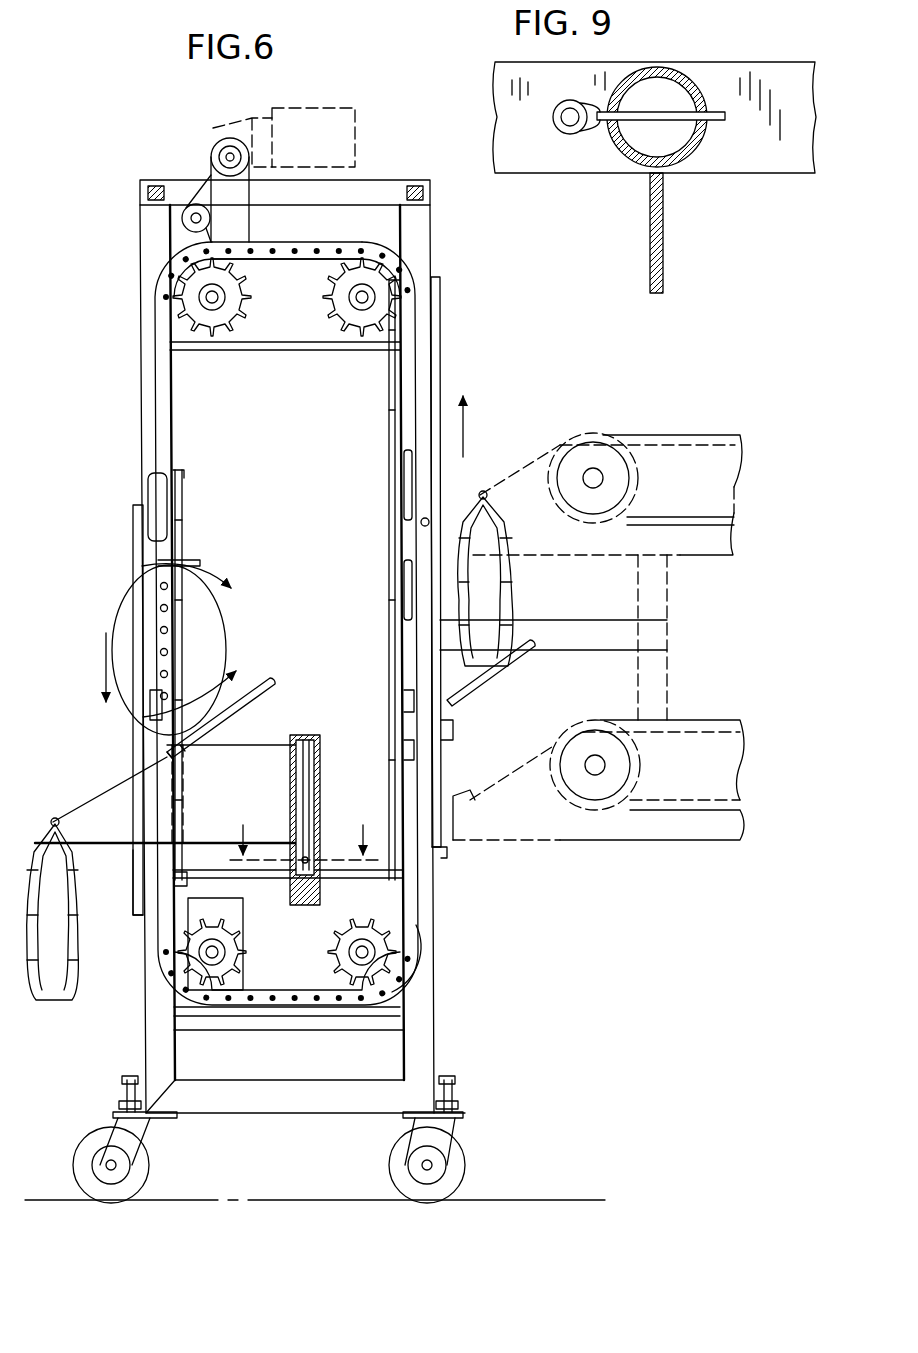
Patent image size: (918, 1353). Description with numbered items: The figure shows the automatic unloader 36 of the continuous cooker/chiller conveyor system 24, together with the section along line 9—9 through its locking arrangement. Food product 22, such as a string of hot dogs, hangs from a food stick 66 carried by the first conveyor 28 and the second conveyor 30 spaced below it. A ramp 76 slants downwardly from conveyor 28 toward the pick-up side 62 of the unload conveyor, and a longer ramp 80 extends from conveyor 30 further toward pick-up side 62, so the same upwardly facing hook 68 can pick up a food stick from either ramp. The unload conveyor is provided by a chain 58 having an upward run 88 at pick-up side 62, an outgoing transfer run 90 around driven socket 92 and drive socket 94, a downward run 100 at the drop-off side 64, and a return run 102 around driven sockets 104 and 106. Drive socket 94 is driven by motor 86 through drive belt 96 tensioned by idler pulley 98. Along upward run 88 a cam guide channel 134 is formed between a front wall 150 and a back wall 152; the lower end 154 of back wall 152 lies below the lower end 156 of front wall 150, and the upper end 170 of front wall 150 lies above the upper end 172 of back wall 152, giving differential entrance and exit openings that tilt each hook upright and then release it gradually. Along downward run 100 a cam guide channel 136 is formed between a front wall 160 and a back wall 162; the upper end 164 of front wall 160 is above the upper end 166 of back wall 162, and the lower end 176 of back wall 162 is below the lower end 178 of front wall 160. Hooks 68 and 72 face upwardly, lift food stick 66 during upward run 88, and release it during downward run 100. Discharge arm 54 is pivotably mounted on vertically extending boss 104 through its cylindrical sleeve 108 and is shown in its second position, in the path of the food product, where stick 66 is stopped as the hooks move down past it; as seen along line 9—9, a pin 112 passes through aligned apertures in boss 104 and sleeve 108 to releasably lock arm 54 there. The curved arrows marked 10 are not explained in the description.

In FIG. 6, the automatic unloader 36 is at (131, 208).
In FIG. 9, the automatic unloader 36 is at (806, 62).
In FIG. 6, the drive motor 86 is at (339, 108).
In FIG. 6, the drive belt 96 is at (216, 144).
In FIG. 6, the idler pulley 98 is at (191, 204).
In FIG. 6, the chain 58 is at (421, 274).
In FIG. 6, the outgoing transfer run 90 is at (298, 262).
In FIG. 6, the drive socket 94 is at (238, 336).
In FIG. 6, the driven socket 92 is at (328, 322).
In FIG. 6, the upper end of front wall 150 170 is at (442, 292).
In FIG. 6, the lower end of front wall 150 156 is at (447, 852).
In FIG. 6, the upper end of back wall 152 172 is at (393, 300).
In FIG. 6, the upward run 88 is at (403, 470).
In FIG. 6, the pick-up side 62 is at (430, 396).
In FIG. 6, the cam guide channel 134 is at (427, 519).
In FIG. 6, the back wall of cam guide channel 134 152 is at (399, 738).
In FIG. 6, the upper end of back wall 162 166 is at (136, 505).
In FIG. 6, the lower end of back wall 162 176 is at (137, 916).
In FIG. 6, the upper end of front wall 160 164 is at (184, 484).
In FIG. 6, the downward run 100 is at (182, 455).
In FIG. 6, the drop-off side 64 is at (150, 545).
In FIG. 6, the cam guide channel 136 is at (170, 563).
In FIG. 6, the bag handling apparatus 10 is at (190, 649).
In FIG. 6, the back wall of cam guide channel 136 162 is at (147, 710).
In FIG. 6, the upwardly facing hook 72 is at (272, 682).
In FIG. 6, the front wall of cam guide channel 136 160 is at (214, 738).
In FIG. 6, the upwardly facing hook 68 is at (484, 690).
In FIG. 6, the front wall of cam guide channel 134 150 is at (447, 736).
In FIG. 6, the discharge arm 54 is at (130, 792).
In FIG. 9, the discharge arm 54 is at (665, 262).
In FIG. 6, the food stick 66 is at (487, 491).
In FIG. 6, the hot dogs 22 is at (509, 603).
In FIG. 6, the ramp 76 is at (561, 450).
In FIG. 6, the continuous cooker/chiller conveyor system 24 is at (752, 438).
In FIG. 6, the first conveyor 28 is at (620, 437).
In FIG. 6, the second conveyor 30 is at (715, 722).
In FIG. 6, the ramp 80 is at (528, 768).
In FIG. 6, the vertically extending boss 104 is at (311, 780).
In FIG. 9, the vertically extending boss 104 is at (699, 82).
In FIG. 6, the cylindrical sleeve 108 is at (316, 805).
In FIG. 9, the cylindrical sleeve 108 is at (720, 146).
In FIG. 6, the section line 9— 9 is at (304, 827).
In FIG. 6, the lower end of front wall 160 178 is at (181, 879).
In FIG. 6, the lower end of back wall 152 154 is at (412, 935).
In FIG. 6, the driven socket 106 is at (320, 966).
In FIG. 6, the return run 102 is at (290, 1009).
In FIG. 9, the releasable locking member 112 is at (556, 128).